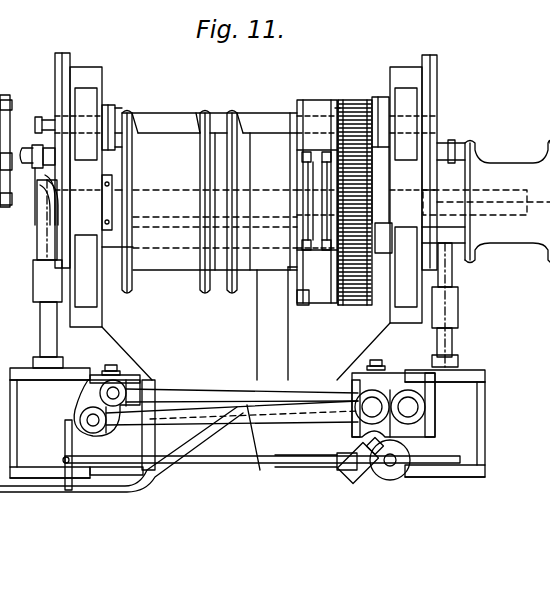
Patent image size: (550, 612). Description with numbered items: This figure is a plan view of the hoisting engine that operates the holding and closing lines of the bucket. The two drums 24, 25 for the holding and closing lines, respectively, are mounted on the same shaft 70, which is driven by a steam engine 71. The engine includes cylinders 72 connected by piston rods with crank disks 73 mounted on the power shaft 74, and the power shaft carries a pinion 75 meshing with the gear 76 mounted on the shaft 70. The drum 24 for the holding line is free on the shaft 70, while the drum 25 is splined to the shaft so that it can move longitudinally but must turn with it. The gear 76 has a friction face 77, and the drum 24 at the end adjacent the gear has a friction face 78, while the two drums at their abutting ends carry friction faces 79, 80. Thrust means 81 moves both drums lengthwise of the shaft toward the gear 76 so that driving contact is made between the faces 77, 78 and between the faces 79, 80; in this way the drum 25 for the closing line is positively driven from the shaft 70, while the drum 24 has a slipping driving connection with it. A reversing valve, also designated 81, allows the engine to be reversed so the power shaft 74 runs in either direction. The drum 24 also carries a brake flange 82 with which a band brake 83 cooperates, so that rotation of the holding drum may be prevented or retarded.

The drum 24 is at (253, 140).
The drum 25 is at (150, 140).
The shaft 70 is at (382, 195).
The steam engine 71 is at (462, 439).
The cylinders 72 is at (47, 455).
The crank disks 73 is at (55, 80).
The power shaft 74 is at (185, 125).
The pinion 75 is at (374, 97).
The gear 76 is at (362, 304).
The friction face 77 is at (339, 305).
The friction face 78 is at (330, 283).
The friction face 79 is at (220, 258).
The friction face 80 is at (222, 268).
The thrust means 81 is at (42, 215).
The brake flange 82 is at (296, 292).
The band brake 83 is at (302, 303).